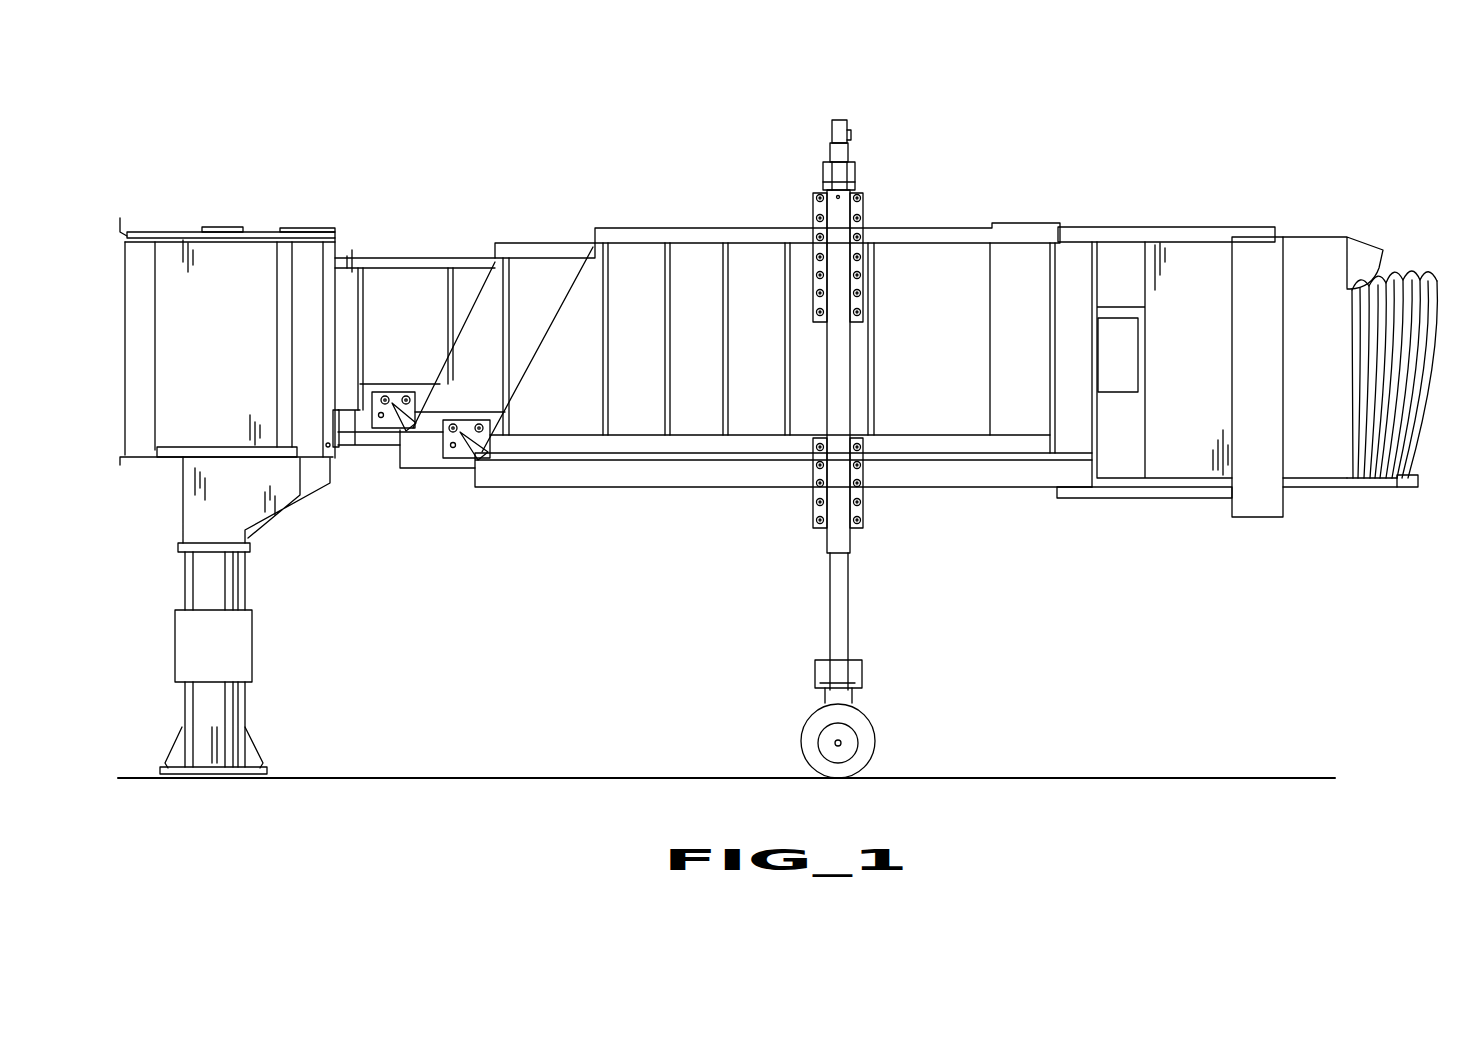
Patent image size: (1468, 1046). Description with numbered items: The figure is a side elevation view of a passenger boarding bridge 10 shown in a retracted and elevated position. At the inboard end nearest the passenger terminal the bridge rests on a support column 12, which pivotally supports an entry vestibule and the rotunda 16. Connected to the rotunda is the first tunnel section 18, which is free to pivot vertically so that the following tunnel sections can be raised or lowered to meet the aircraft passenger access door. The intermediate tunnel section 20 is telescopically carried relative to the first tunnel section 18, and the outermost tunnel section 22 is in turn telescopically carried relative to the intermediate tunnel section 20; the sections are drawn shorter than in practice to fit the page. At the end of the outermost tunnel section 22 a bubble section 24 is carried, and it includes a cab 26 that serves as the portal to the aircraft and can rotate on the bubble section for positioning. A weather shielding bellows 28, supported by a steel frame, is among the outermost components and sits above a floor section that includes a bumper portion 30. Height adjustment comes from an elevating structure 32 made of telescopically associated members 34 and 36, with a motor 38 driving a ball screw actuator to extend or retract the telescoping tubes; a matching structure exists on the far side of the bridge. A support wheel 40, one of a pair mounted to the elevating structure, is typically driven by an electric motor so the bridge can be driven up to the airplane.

The passenger boarding bridge 10 is at (932, 148).
The support column 12 is at (253, 643).
The rotunda 16 is at (250, 231).
The first tunnel section 18 is at (387, 258).
The intermediate tunnel section 20 is at (510, 243).
The outermost tunnel section 22 is at (627, 228).
The bubble section 24 is at (1128, 227).
The cab 26 is at (1305, 237).
The weather shielding bellows 28 is at (1402, 268).
The bumper portion 30 is at (1420, 487).
The elevating structure 32 is at (823, 538).
The telescopically associated member 34 is at (850, 612).
The telescopically associated member 36 is at (852, 545).
The motor 38 is at (830, 124).
The support wheel 40 is at (878, 723).